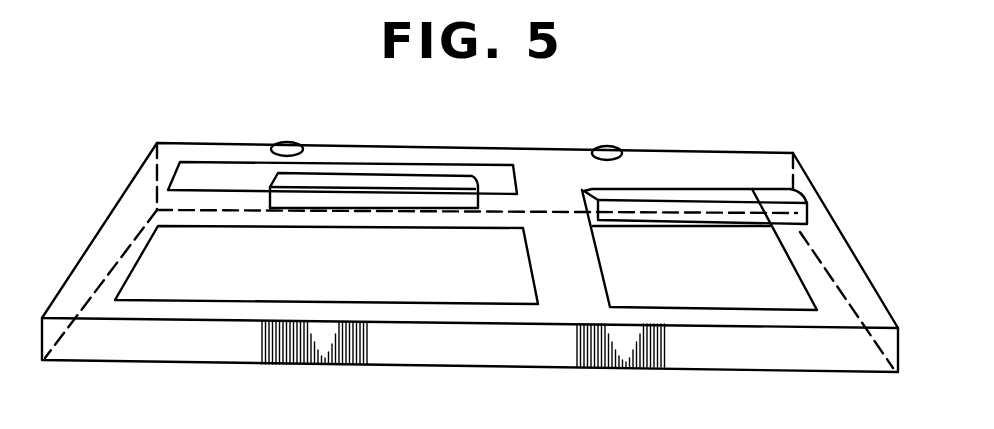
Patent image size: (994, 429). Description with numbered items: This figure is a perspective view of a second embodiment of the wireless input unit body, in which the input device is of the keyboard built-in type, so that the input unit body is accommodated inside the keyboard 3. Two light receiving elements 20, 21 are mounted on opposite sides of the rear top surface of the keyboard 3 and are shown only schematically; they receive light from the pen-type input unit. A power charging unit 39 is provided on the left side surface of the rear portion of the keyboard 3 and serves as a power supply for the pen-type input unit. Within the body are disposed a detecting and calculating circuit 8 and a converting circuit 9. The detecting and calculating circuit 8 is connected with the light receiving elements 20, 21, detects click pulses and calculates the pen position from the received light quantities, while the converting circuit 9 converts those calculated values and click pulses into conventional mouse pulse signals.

The keyboard 3 is at (127, 208).
The detecting and calculating circuit 8 is at (370, 232).
The converting circuit 9 is at (298, 210).
The light receiving element 20 is at (290, 141).
The light receiving element 21 is at (608, 145).
The power charging unit 39 is at (673, 213).